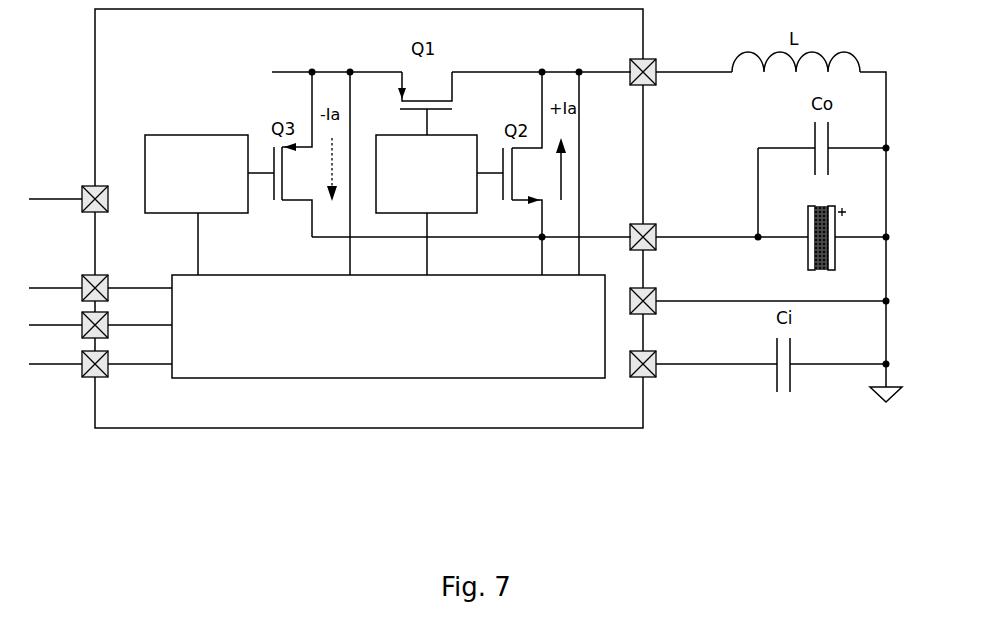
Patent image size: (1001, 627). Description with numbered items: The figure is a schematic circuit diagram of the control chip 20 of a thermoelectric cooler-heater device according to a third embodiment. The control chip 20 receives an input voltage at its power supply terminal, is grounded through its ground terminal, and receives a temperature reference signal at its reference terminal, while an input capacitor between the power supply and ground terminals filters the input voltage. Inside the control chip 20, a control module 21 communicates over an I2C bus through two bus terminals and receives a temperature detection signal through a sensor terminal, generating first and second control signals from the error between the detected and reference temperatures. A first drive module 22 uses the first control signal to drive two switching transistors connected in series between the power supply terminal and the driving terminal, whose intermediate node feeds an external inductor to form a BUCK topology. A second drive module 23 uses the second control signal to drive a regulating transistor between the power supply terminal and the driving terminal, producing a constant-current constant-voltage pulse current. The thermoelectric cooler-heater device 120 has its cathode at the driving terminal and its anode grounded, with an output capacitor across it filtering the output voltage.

The control chip 20 is at (146, 408).
The control module 21 is at (399, 350).
The first drive module 22 is at (437, 207).
The second drive module 23 is at (207, 207).
The thermoelectric cooler-heater device 120 is at (847, 225).